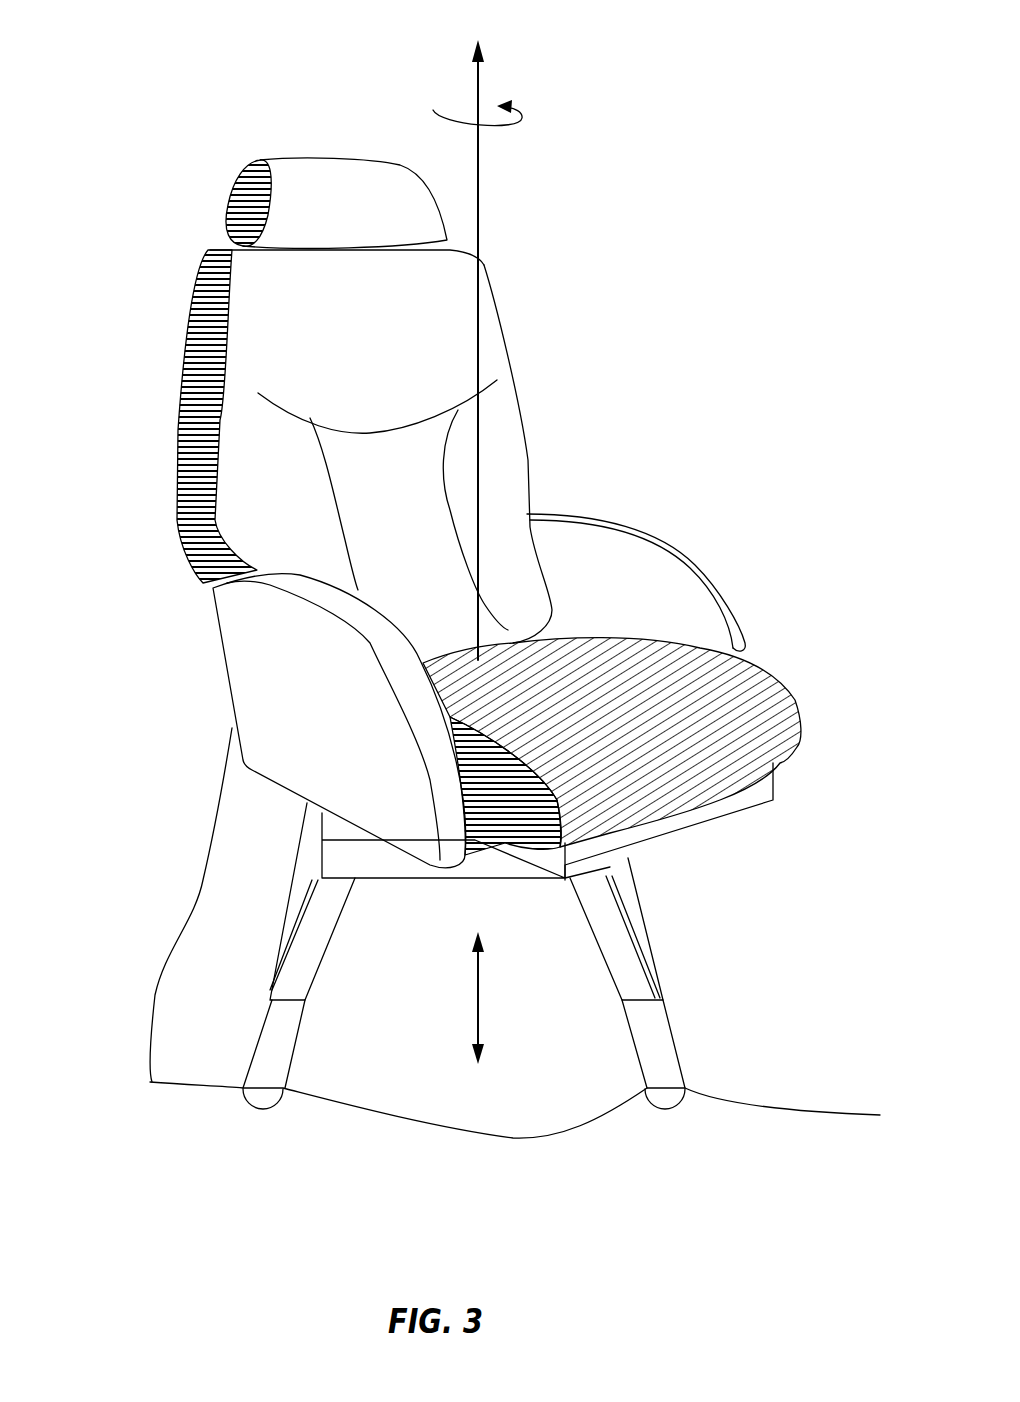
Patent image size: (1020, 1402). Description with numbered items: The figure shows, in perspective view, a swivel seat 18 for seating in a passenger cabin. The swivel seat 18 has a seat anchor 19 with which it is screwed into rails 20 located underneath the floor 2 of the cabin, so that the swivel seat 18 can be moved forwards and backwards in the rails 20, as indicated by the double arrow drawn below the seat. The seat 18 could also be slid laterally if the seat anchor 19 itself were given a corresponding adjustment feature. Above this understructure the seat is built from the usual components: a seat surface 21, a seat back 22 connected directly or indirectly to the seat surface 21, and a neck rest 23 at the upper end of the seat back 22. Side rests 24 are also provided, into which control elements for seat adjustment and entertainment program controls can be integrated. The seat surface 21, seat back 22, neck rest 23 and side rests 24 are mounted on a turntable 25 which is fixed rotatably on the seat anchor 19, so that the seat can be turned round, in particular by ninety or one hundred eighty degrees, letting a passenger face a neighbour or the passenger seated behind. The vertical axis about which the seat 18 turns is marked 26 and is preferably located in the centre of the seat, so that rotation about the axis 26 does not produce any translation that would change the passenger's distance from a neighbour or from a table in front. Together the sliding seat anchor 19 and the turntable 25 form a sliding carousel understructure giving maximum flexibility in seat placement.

The floor 2 is at (156, 985).
The swivel seat 18 is at (186, 74).
The seat anchor 19 is at (617, 935).
The rails 20 is at (257, 1103).
The seat surface 21 is at (787, 690).
The seat back 22 is at (186, 383).
The neck rest 23 is at (236, 184).
The side rests 24 is at (240, 694).
The turntable 25 is at (723, 822).
The vertical axis 26 is at (490, 150).